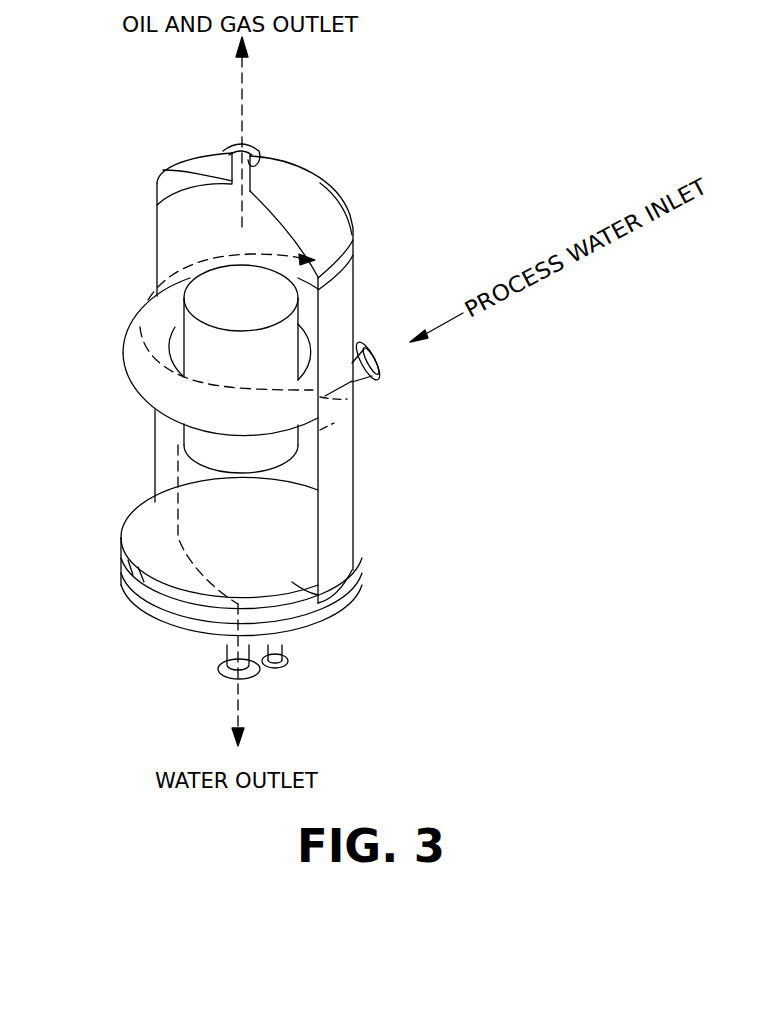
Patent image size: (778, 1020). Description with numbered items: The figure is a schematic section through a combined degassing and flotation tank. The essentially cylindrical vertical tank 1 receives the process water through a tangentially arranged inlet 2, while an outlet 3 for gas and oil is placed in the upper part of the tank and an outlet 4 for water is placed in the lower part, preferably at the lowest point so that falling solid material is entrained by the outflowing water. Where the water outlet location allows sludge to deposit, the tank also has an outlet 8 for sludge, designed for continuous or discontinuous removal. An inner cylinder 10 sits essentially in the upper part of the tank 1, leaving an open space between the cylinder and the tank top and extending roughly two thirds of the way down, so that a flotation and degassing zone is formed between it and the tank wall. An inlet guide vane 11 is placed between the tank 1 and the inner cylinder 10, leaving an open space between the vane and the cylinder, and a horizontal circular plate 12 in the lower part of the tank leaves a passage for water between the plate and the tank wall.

The tank 1 is at (157, 206).
The inlet 2 is at (387, 372).
The outlet for gas and oil 3 is at (256, 152).
The outlet for water 4 is at (214, 668).
The outlet for sludge 8 is at (292, 662).
The inner cylinder 10 is at (185, 313).
The inlet guide vane 11 is at (130, 368).
The horizontal circular plate 12 is at (340, 612).